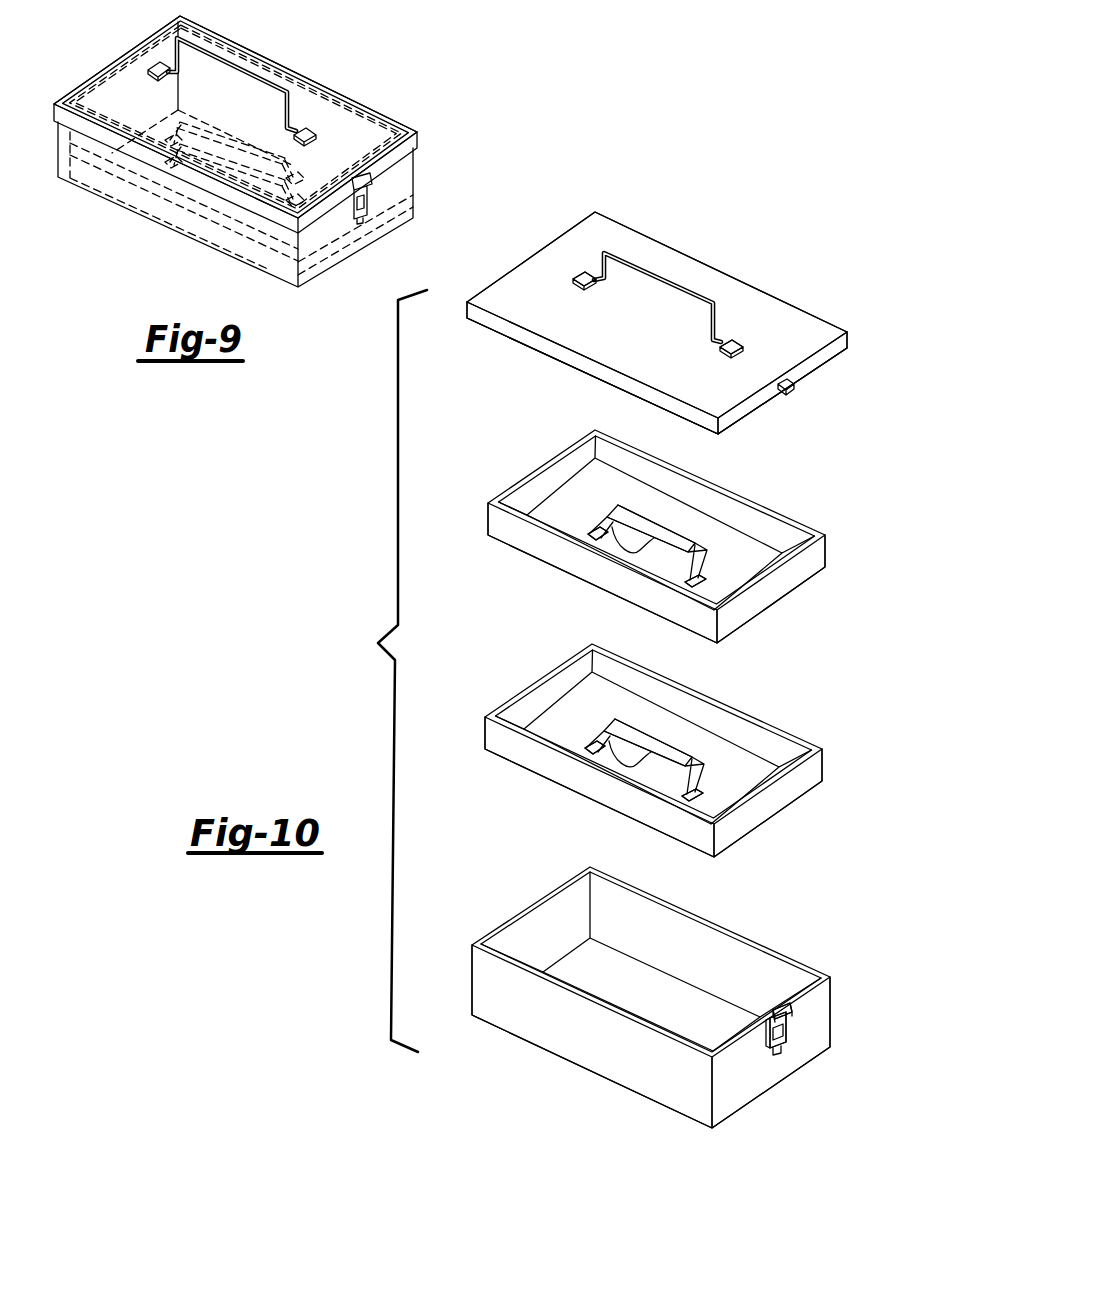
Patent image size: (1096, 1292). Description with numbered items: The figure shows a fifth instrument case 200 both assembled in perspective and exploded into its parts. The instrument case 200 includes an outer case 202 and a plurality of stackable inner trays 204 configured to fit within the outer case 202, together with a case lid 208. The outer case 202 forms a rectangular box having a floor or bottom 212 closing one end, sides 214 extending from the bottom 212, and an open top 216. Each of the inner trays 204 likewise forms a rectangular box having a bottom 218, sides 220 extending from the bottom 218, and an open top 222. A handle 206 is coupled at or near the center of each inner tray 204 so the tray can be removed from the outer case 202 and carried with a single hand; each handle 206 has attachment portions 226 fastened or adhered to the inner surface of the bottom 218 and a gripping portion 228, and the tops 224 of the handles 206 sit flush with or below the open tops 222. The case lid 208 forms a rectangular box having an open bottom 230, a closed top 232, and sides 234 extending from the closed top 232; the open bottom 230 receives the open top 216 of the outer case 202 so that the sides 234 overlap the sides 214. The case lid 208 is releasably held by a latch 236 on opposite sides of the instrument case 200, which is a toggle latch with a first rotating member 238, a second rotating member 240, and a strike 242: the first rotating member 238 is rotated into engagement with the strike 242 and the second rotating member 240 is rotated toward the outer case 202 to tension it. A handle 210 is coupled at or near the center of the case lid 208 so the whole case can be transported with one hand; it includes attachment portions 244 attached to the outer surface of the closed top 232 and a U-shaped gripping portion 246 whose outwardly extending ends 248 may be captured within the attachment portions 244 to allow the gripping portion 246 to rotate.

In FIG. 9, the instrument case 200 is at (352, 40).
In FIG. 10, the instrument case 200 is at (385, 671).
In FIG. 9, the outer case 202 is at (260, 245).
In FIG. 10, the outer case 202 is at (538, 1025).
In FIG. 9, the inner trays 204 is at (153, 183).
In FIG. 10, the inner trays 204 is at (510, 527).
In FIG. 9, the handle 206 is at (318, 175).
In FIG. 10, the handle 206 is at (695, 542).
In FIG. 9, the case lid 208 is at (310, 110).
In FIG. 10, the case lid 208 is at (718, 290).
In FIG. 9, the handle 210 is at (270, 78).
In FIG. 10, the handle 210 is at (640, 265).
In FIG. 10, the bottom 212 is at (713, 1018).
In FIG. 10, the sides 214 is at (520, 935).
In FIG. 10, the open top 216 is at (705, 947).
In FIG. 10, the bottom 218 is at (750, 555).
In FIG. 10, the sides 220 is at (617, 455).
In FIG. 10, the open top 222 is at (667, 517).
In FIG. 10, the tops 224 is at (625, 510).
In FIG. 10, the attachment portions 226 is at (708, 575).
In FIG. 10, the gripping portion 228 is at (610, 513).
In FIG. 10, the open bottom 230 is at (762, 416).
In FIG. 10, the closed top 232 is at (798, 328).
In FIG. 10, the sides 234 is at (507, 272).
In FIG. 9, the latch 236 is at (385, 205).
In FIG. 10, the latch 236 is at (766, 1080).
In FIG. 10, the first rotating member 238 is at (790, 1012).
In FIG. 10, the second rotating member 240 is at (783, 1042).
In FIG. 10, the strike 242 is at (790, 392).
In FIG. 10, the attachment portions 244 is at (583, 272).
In FIG. 10, the gripping portion 246 is at (667, 287).
In FIG. 10, the ends 248 is at (580, 289).